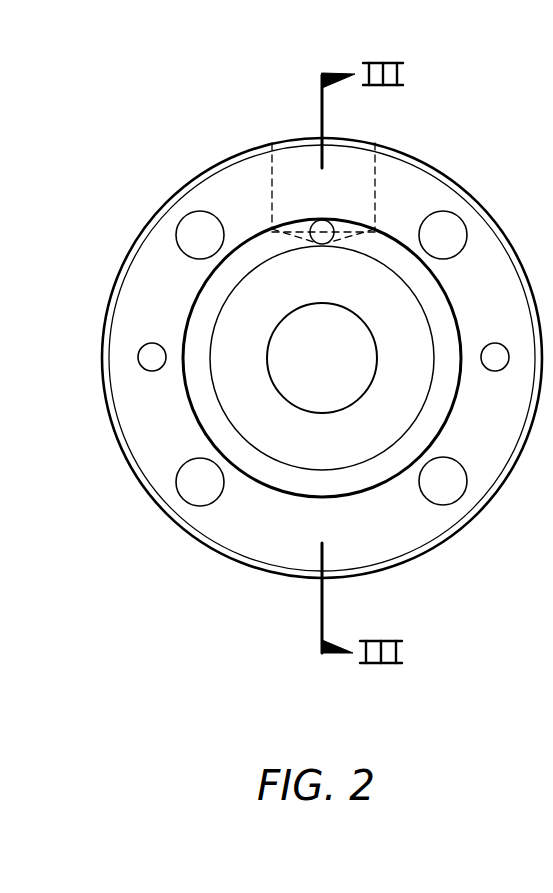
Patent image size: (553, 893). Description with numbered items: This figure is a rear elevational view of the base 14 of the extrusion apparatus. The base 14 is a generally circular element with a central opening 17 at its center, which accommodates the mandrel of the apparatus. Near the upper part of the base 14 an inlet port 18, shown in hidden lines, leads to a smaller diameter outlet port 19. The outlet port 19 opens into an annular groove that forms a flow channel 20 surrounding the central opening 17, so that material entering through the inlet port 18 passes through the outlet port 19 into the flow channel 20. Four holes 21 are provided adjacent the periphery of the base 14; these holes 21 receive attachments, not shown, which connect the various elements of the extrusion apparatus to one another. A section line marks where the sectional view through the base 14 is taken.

The base 14 is at (425, 552).
The central opening 17 is at (372, 338).
The inlet port 18 is at (276, 186).
The outlet port 19 is at (323, 246).
The flow channel 20 is at (383, 247).
The holes 21 is at (188, 222).